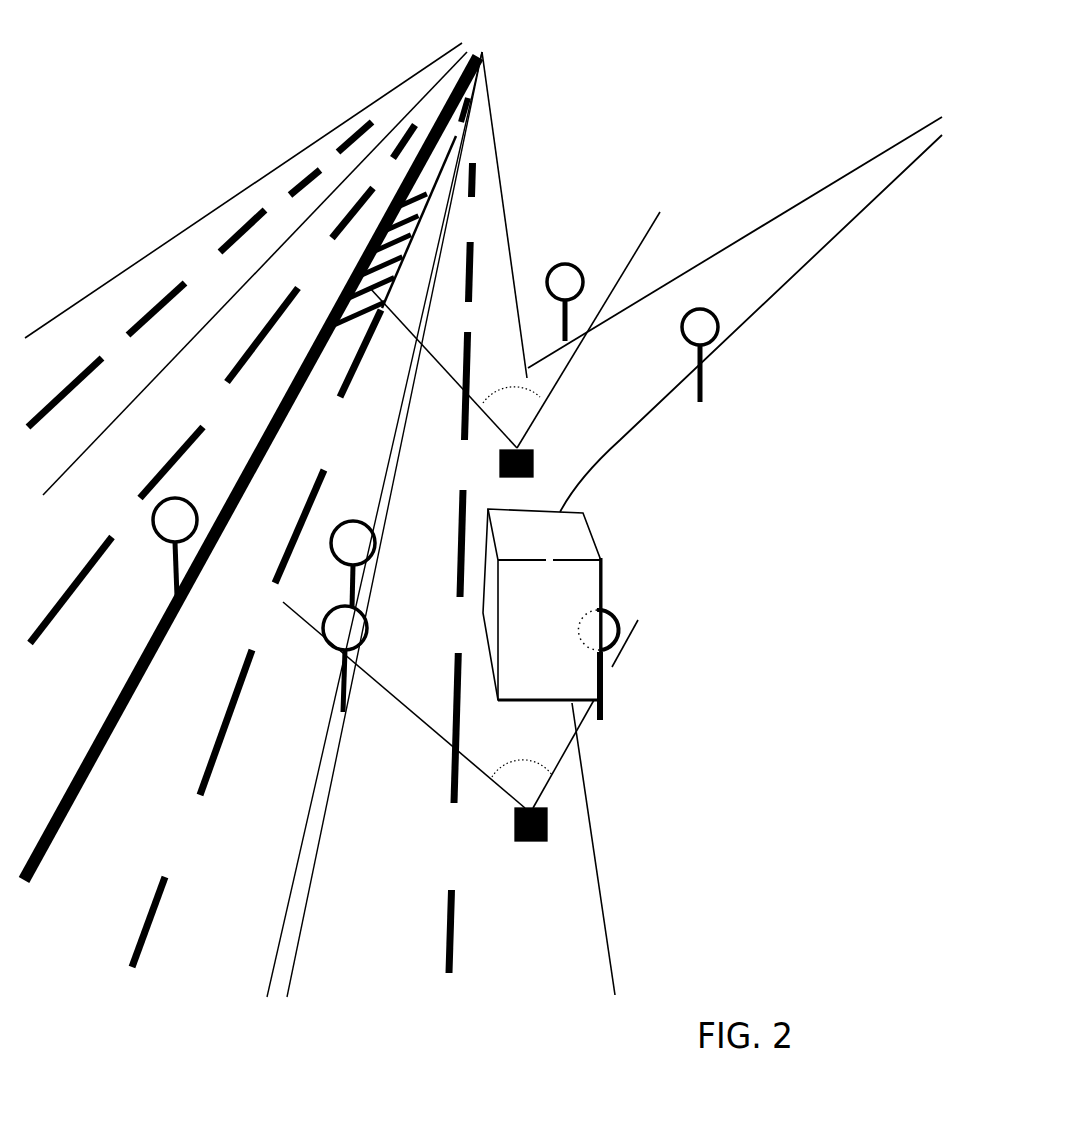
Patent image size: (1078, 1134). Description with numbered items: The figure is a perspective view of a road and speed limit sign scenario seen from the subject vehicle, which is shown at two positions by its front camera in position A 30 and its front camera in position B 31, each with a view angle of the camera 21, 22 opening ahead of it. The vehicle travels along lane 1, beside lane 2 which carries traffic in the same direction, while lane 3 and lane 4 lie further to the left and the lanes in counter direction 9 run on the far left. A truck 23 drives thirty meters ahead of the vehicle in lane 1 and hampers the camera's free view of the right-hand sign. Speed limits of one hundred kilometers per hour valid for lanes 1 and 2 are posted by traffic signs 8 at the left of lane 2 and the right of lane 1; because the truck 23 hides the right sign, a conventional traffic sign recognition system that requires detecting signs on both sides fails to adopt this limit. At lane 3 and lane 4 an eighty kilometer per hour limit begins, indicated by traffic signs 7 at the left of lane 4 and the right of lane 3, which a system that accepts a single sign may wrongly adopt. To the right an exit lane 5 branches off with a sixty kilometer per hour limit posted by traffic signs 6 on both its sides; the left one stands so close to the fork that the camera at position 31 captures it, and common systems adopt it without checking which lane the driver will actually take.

The lane 1 is at (527, 944).
The lane 2 is at (353, 945).
The lane 3 is at (203, 943).
The lane 4 is at (50, 945).
The exit lane to the right 5 is at (767, 270).
The traffic signs for speed limitation valid for exit lane 6 is at (574, 264).
The traffic signs for speed limitation valid for lanes 3 and 4 7 is at (356, 522).
The traffic signs for speed limitation valid for lanes 1 and 2 8 is at (368, 615).
The lanes in counter direction 9 is at (437, 105).
The view angle of camera 21 is at (528, 760).
The view angle of camera 22 is at (504, 387).
The truck 23 is at (587, 522).
The front camera in vehicle in position A 30 is at (460, 739).
The front camera in vehicle in position B 31 is at (514, 359).